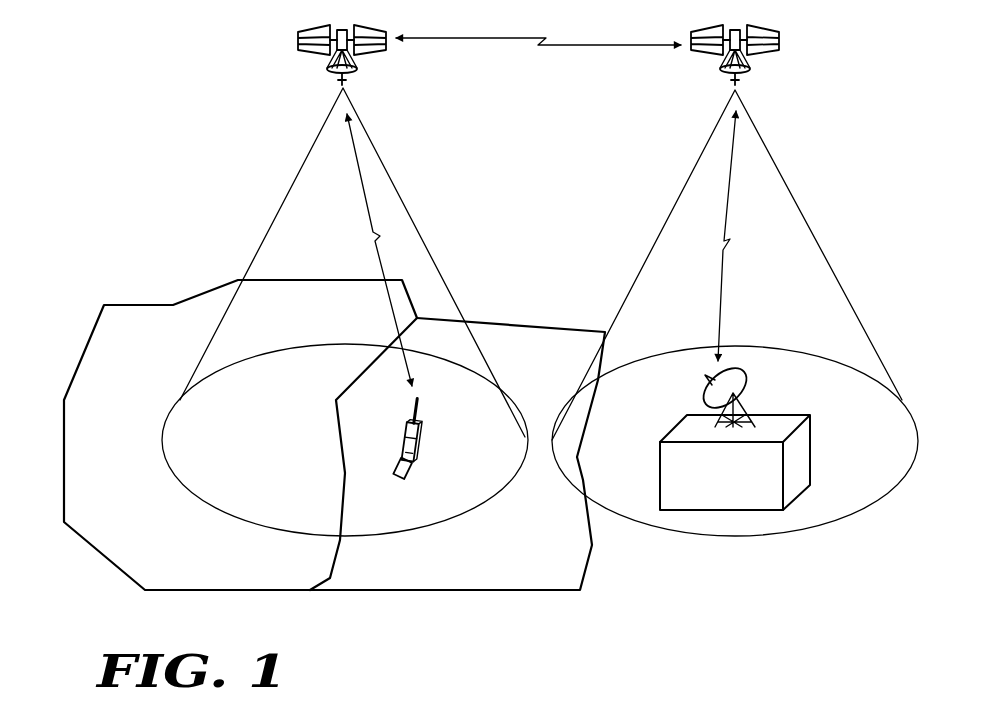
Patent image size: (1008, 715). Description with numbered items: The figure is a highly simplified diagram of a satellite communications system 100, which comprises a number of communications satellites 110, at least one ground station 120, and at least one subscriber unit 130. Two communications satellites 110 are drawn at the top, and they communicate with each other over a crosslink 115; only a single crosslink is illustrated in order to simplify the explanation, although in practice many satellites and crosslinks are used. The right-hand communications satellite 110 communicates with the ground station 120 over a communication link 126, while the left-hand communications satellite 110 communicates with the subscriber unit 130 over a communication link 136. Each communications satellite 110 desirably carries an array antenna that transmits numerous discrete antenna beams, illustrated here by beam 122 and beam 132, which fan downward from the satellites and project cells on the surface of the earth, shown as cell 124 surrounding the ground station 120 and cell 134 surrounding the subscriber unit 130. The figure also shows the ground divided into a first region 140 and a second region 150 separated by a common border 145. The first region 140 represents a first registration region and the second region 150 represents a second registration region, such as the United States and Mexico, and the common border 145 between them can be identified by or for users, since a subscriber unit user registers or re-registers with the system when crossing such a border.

The satellite communications system 100 is at (437, 665).
The communications satellite 110 is at (296, 42).
The crosslink 115 is at (519, 37).
The ground station 120 is at (809, 460).
The antenna beam 122 is at (843, 292).
The cell 124 is at (840, 519).
The communication link 126 is at (723, 300).
The subscriber unit 130 is at (428, 442).
The antenna beam 132 is at (449, 291).
The cell 134 is at (162, 446).
The communication link 136 is at (366, 198).
The first region 140 is at (205, 572).
The common border 145 is at (340, 446).
The second region 150 is at (545, 571).